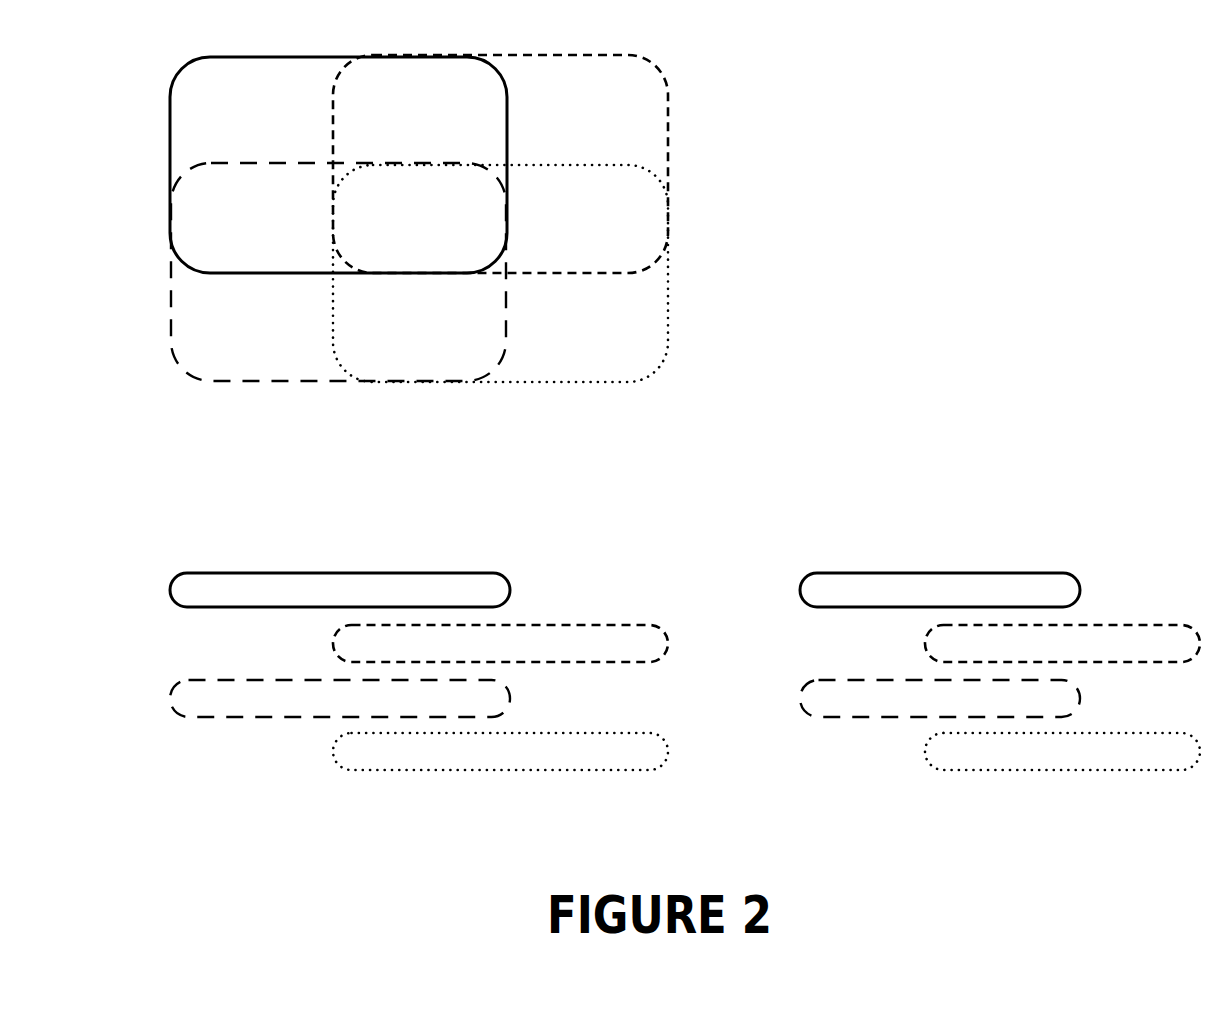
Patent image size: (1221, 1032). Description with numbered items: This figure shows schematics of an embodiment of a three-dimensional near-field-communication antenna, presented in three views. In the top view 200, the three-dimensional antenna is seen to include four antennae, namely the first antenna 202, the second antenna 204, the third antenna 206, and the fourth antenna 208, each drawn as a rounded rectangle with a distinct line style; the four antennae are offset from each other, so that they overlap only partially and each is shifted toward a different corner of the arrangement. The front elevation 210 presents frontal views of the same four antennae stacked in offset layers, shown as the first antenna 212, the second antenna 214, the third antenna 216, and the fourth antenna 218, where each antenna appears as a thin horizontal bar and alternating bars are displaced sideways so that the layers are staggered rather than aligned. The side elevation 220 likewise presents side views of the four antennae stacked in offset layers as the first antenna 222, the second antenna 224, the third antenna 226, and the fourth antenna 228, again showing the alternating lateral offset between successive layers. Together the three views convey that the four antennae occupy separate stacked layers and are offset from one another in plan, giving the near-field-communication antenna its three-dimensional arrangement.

The top view 200 is at (476, 36).
The antenna 1 202 is at (223, 120).
The antenna 2 204 is at (652, 120).
The antenna 3 206 is at (652, 372).
The antenna 4 208 is at (223, 372).
The front elevation 210 is at (518, 832).
The antenna 1 212 is at (415, 600).
The antenna 2 214 is at (577, 656).
The antenna 3 216 is at (577, 764).
The antenna 4 218 is at (415, 708).
The side elevation 220 is at (1090, 832).
The antenna 1 222 is at (1016, 602).
The antenna 2 224 is at (1138, 656).
The antenna 3 226 is at (1138, 764).
The antenna 4 228 is at (1013, 708).